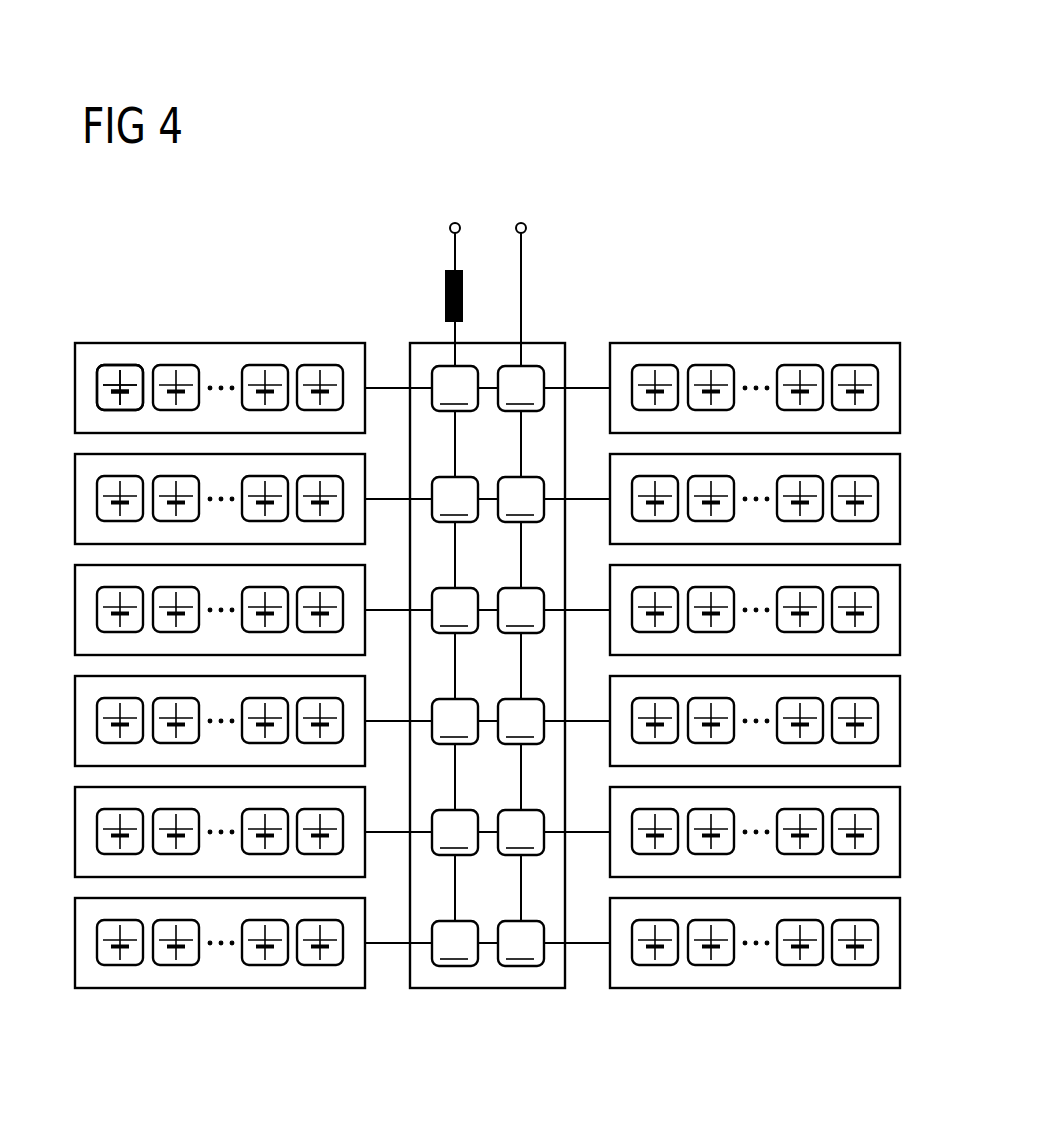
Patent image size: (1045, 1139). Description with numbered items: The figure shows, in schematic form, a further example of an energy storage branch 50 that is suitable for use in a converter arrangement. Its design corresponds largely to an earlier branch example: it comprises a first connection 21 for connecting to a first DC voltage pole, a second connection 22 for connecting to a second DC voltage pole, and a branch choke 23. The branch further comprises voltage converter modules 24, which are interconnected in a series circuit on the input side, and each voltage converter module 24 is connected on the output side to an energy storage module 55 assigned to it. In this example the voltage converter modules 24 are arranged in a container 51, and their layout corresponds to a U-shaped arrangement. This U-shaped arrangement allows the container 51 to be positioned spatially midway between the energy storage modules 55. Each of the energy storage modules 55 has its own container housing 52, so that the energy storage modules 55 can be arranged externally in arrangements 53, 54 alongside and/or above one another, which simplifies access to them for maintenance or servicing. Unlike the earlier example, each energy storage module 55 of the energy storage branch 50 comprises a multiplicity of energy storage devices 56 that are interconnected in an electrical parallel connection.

The energy storage branch 50 is at (494, 86).
The first connection 21 is at (455, 223).
The second connection 22 is at (521, 223).
The branch choke 23 is at (444, 292).
The voltage converter module 24 is at (487, 666).
The container 51 is at (487, 988).
The container housing 52 is at (225, 343).
The arrangement 53 is at (295, 268).
The arrangement 54 is at (829, 266).
The energy storage module 55 is at (488, 582).
The energy storage device 56 is at (128, 365).